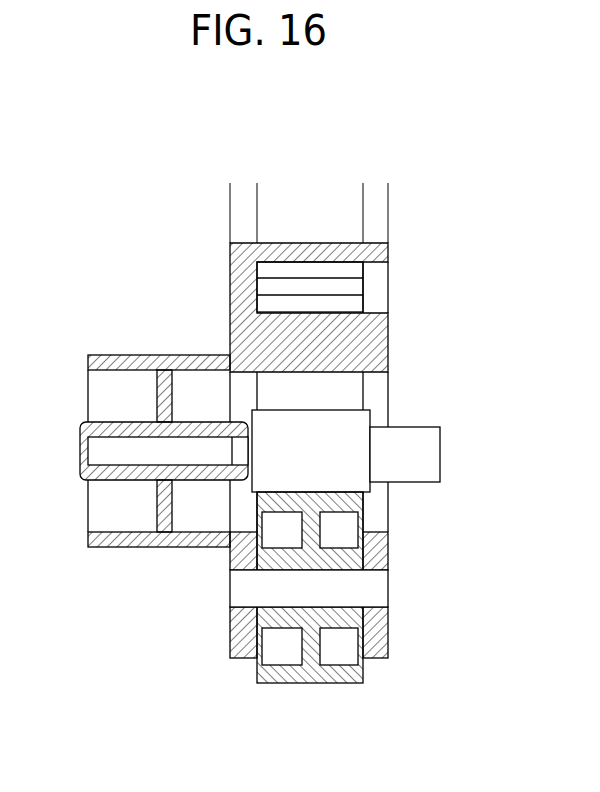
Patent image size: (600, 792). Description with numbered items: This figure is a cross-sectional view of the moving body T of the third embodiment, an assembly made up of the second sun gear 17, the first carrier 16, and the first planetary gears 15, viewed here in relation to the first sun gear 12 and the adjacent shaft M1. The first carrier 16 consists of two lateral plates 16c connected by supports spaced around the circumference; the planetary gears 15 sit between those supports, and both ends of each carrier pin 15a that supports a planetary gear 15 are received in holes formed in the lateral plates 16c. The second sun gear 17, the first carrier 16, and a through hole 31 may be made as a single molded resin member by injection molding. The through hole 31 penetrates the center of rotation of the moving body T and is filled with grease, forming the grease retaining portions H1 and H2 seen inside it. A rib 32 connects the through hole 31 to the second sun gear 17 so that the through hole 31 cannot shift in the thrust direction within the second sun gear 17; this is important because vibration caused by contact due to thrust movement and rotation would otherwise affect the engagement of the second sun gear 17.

The moving body T is at (434, 176).
The first carrier 16 is at (298, 243).
The lateral plates 16c is at (255, 190).
The second sun gear 17 is at (133, 355).
The rib 32 is at (160, 400).
The through hole 31 is at (118, 478).
The grease retaining portion H2 is at (85, 449).
The grease retaining portion H1 is at (238, 452).
The first sun gear 12 is at (345, 420).
The motor shaft M1 is at (432, 455).
The first planetary gears 15 is at (355, 296).
The carrier pin 15a is at (380, 588).